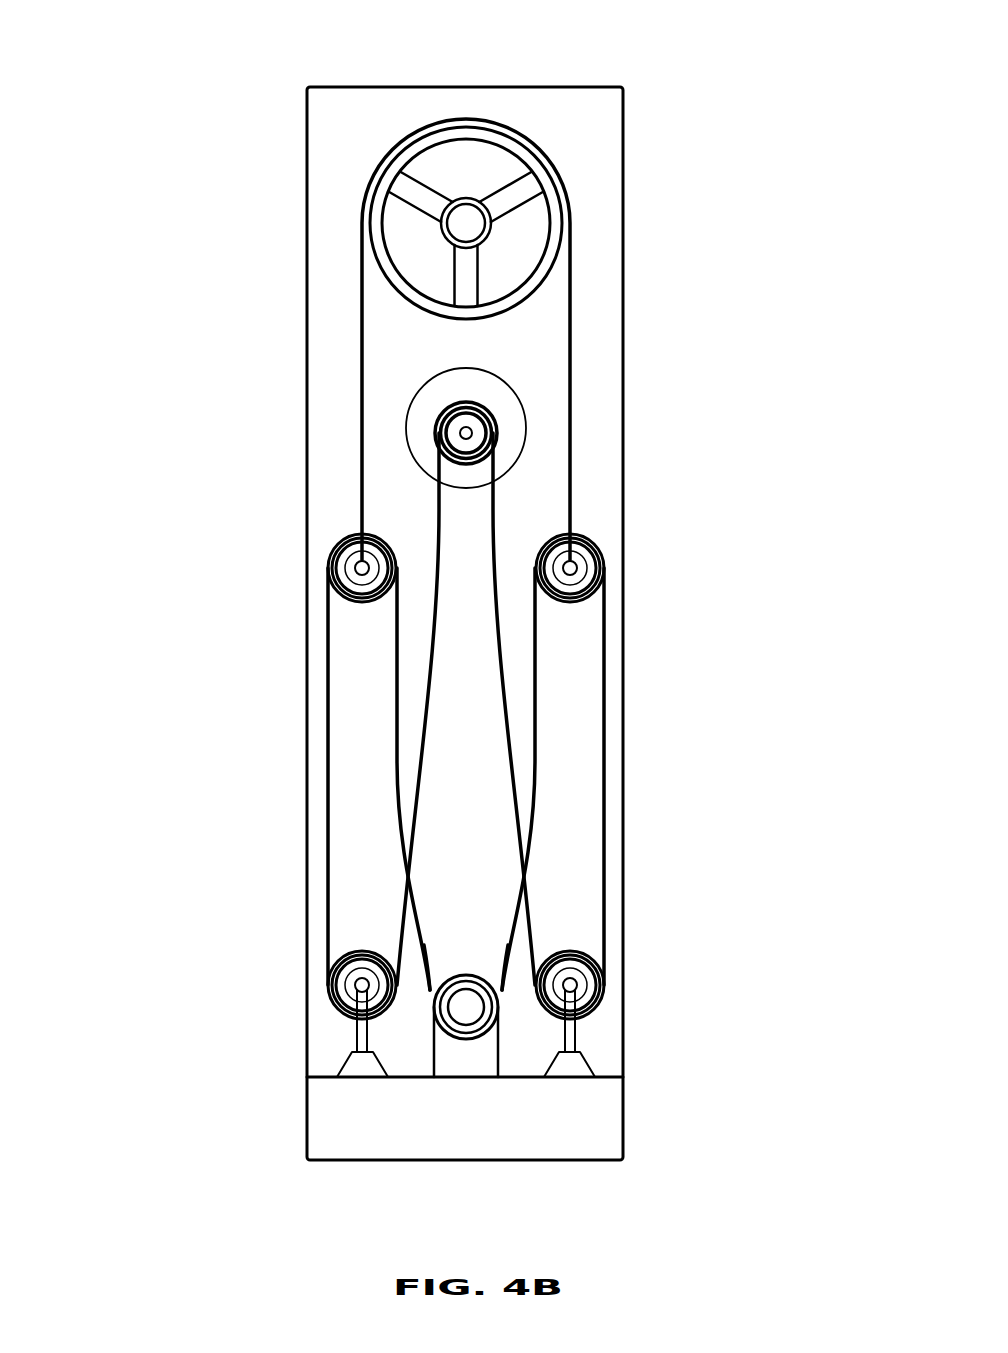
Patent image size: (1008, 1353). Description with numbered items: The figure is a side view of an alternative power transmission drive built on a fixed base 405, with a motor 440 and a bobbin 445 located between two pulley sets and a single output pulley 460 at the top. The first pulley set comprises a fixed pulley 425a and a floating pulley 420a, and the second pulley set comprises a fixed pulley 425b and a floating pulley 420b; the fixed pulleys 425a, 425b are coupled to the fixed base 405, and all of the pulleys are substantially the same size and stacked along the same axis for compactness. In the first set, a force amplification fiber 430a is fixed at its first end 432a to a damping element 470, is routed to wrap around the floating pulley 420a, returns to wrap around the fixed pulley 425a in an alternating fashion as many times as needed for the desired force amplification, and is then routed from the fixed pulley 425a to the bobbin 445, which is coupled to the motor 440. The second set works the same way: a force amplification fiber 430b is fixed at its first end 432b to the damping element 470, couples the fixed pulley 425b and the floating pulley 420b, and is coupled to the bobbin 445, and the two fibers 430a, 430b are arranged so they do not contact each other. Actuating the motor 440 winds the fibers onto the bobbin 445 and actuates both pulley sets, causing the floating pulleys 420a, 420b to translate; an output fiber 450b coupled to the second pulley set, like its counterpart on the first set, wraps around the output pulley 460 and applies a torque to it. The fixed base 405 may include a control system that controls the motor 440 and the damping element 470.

The fixed base 405 is at (338, 168).
The output pulley 460 is at (498, 212).
The output fiber 450b is at (782, 191).
The motor 440 is at (493, 395).
The bobbin 445 is at (477, 432).
The floating pulley 420a is at (340, 562).
The floating pulley 420b is at (592, 562).
The force amplification fiber 430a is at (333, 747).
The force amplification fiber 430b is at (600, 747).
The fixed pulley 425a is at (335, 984).
The fixed pulley 425b is at (597, 984).
The first end 432a is at (428, 997).
The first end 432b is at (498, 998).
The damping element 470 is at (462, 1008).